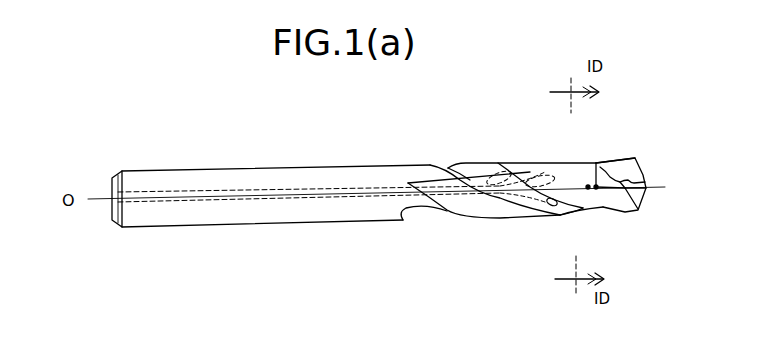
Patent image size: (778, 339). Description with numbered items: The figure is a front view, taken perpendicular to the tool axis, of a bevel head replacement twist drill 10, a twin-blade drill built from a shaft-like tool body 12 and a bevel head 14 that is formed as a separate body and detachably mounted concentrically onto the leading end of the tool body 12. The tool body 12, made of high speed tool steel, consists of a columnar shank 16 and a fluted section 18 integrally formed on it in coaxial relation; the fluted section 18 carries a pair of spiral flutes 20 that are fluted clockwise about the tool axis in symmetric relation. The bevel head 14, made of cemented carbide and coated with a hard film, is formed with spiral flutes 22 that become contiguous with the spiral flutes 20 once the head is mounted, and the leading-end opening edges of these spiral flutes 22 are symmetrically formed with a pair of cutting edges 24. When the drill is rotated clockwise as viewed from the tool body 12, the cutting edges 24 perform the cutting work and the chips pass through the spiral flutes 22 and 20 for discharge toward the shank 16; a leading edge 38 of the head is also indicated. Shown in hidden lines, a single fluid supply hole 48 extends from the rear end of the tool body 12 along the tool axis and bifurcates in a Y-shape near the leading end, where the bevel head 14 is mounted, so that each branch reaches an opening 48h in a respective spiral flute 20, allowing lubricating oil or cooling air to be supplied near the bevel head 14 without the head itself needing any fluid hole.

The bevel head replacement twist drill 10 is at (214, 108).
The tool body 12 is at (207, 250).
The bevel head 14 is at (636, 137).
The shank 16 is at (275, 208).
The fluted section 18 is at (464, 143).
The spiral flutes 20 is at (500, 176).
The spiral flutes 22 is at (620, 170).
The cutting edges 24 is at (640, 168).
The leading edge 38 is at (575, 204).
The fluid supply hole 48 is at (328, 190).
The opening of the fluid supply hole 48h is at (547, 206).